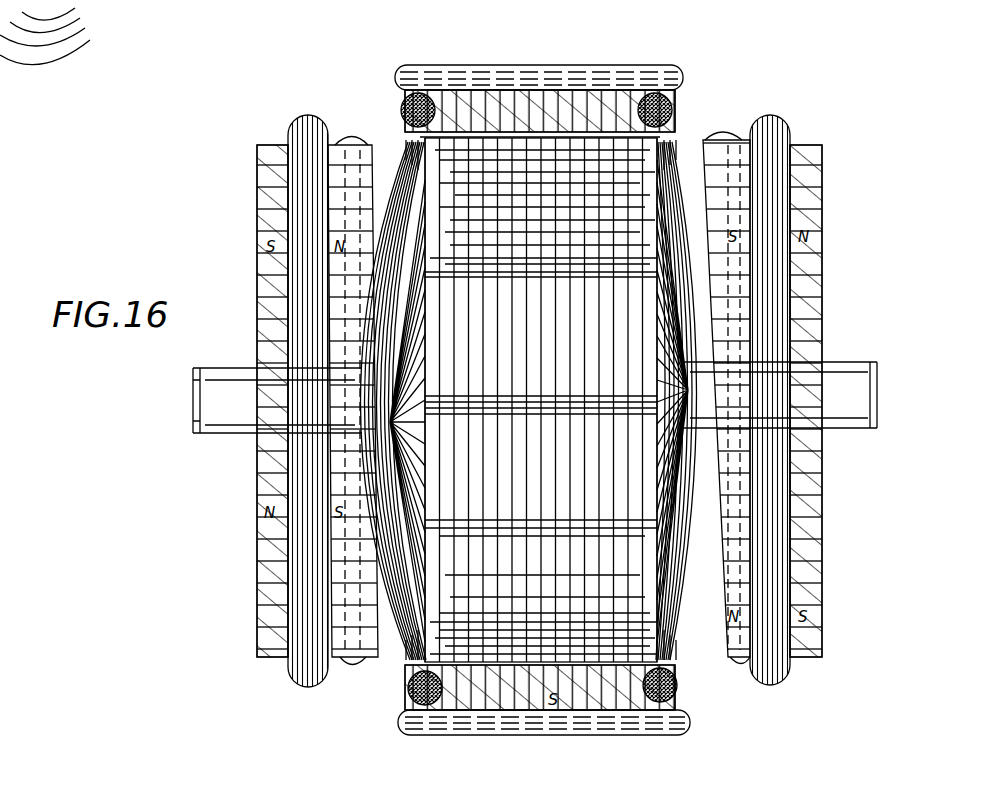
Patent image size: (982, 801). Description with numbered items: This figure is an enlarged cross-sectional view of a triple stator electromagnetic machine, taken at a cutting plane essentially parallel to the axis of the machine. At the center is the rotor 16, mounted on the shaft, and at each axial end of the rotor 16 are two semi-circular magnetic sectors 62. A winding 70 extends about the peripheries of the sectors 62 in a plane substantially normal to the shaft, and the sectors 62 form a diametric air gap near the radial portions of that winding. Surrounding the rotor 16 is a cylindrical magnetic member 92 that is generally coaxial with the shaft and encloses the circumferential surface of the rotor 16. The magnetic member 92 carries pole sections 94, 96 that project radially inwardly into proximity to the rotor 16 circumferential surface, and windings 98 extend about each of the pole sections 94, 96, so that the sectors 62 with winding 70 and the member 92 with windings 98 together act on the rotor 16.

The rotor 16 is at (693, 142).
The semi-circular magnetic sectors 62 is at (365, 148).
The winding 70 is at (308, 116).
The cylindrical magnetic member 92 is at (590, 65).
The pole section 94 is at (445, 148).
The pole section 96 is at (668, 662).
The windings 98 is at (432, 142).
The element shaft is at (535, 397).